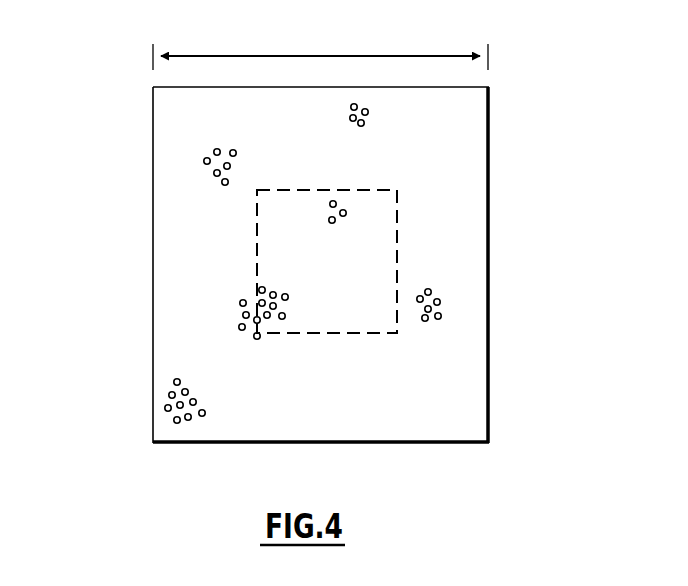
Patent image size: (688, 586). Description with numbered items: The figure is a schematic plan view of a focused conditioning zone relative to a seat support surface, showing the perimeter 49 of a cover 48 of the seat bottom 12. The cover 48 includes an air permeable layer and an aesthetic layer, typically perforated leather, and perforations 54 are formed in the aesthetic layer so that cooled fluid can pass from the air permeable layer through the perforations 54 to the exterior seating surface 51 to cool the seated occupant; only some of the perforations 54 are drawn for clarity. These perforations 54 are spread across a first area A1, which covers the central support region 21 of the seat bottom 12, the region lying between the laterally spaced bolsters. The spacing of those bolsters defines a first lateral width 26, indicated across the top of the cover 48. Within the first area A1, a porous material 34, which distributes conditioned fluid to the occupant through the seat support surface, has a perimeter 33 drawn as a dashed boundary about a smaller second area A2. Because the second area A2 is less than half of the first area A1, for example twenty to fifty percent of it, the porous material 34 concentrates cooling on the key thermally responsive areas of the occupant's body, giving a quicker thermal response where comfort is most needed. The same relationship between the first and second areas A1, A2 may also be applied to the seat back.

The seat bottom 12 is at (311, 286).
The first lateral width 26 is at (268, 56).
The cover 48 is at (497, 106).
The perimeter 49 is at (489, 303).
The exterior seating surface 51 is at (470, 378).
The central support region 21 is at (433, 415).
The perimeter 33 is at (397, 275).
The porous material 34 is at (370, 240).
The perforations 54 is at (277, 336).
The first area A1 is at (368, 428).
The second area A2 is at (340, 302).